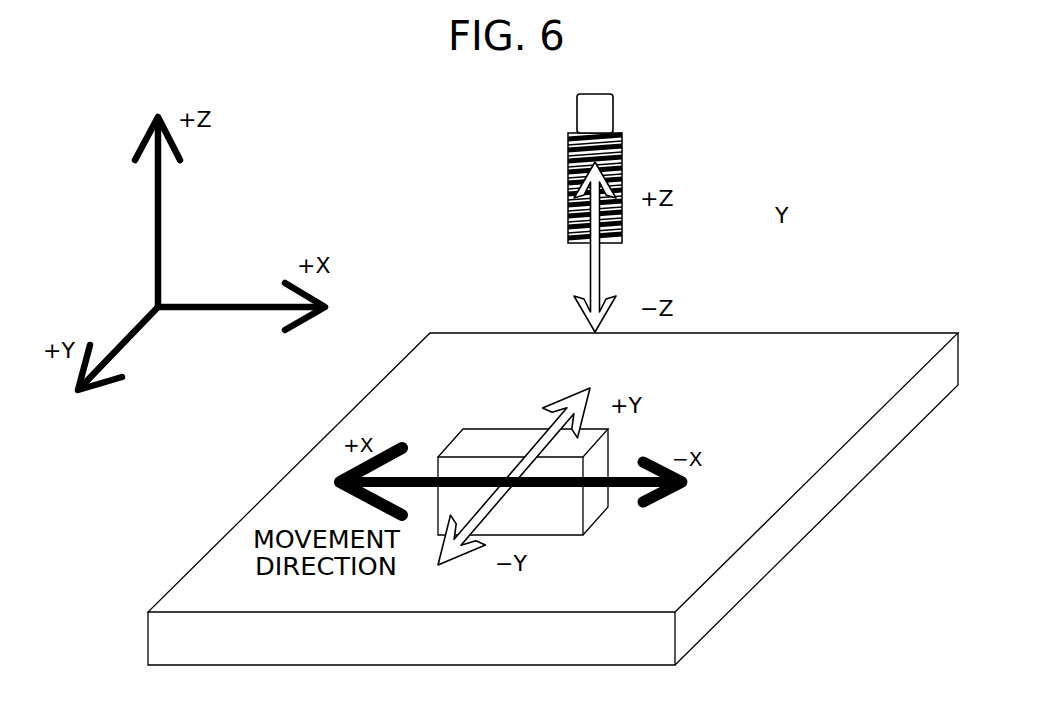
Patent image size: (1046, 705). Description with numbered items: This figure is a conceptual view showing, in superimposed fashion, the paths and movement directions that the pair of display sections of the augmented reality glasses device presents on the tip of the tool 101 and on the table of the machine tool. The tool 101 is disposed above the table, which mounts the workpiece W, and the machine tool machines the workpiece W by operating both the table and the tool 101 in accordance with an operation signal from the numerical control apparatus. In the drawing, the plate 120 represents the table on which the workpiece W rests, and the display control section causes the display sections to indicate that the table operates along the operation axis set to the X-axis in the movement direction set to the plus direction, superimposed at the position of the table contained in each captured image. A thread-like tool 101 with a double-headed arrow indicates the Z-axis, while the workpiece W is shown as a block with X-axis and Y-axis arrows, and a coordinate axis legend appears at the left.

The tool 101 is at (607, 113).
The stage plate 120 is at (912, 348).
The workpiece W is at (470, 442).